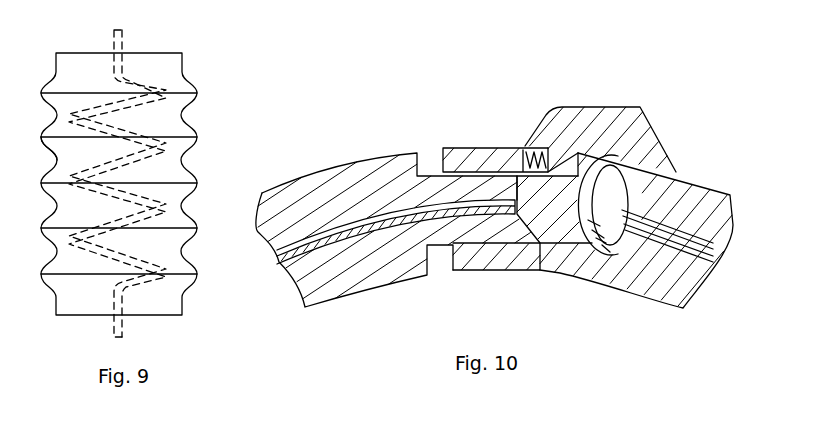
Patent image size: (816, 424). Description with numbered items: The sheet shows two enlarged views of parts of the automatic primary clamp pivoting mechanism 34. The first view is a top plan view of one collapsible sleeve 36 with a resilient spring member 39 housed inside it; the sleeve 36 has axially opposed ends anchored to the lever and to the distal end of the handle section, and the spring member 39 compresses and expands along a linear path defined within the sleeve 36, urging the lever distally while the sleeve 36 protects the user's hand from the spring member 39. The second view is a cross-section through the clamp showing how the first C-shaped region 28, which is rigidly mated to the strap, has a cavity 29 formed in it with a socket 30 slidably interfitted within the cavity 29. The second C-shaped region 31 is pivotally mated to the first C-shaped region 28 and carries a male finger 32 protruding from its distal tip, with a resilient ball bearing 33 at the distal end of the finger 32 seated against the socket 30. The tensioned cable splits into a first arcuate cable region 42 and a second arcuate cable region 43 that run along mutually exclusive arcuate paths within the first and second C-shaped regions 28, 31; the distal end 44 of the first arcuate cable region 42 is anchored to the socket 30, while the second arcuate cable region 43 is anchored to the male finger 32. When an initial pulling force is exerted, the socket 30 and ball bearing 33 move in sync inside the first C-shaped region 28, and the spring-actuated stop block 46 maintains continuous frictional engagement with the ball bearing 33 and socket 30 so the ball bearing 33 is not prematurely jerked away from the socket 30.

In FIG. 10, the first C-shaped region 28 is at (628, 280).
In FIG. 10, the cavity 29 is at (607, 192).
In FIG. 10, the socket 30 is at (595, 245).
In FIG. 10, the second C-shaped region 31 is at (353, 288).
In FIG. 10, the male finger 32 is at (475, 232).
In FIG. 10, the ball bearing 33 is at (555, 230).
In FIG. 9, the automatic primary clamp pivoting mechanism 34 is at (213, 138).
In FIG. 10, the automatic primary clamp pivoting mechanism 34 is at (475, 124).
In FIG. 9, the collapsible sleeve 36 is at (53, 158).
In FIG. 9, the resilient spring member 39 is at (122, 53).
In FIG. 10, the first arcuate cable region 42 is at (700, 247).
In FIG. 10, the second arcuate cable region 43 is at (277, 250).
In FIG. 10, the distal end of first arcuate cable region 44 is at (617, 215).
In FIG. 10, the spring-actuated stop block 46 is at (608, 130).